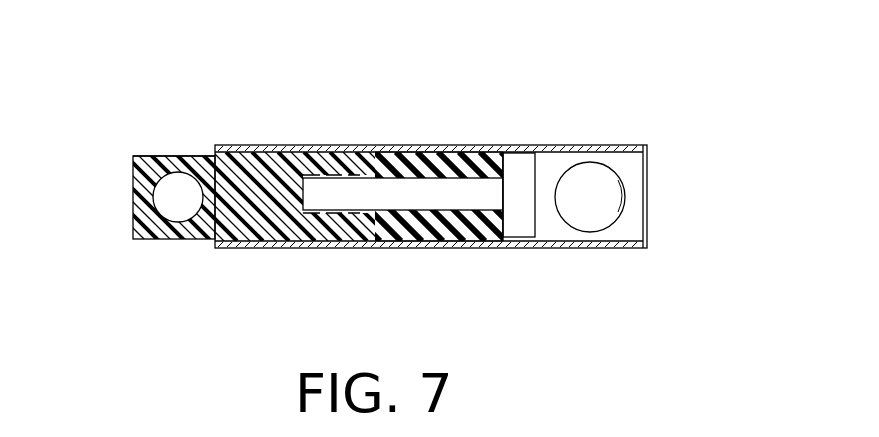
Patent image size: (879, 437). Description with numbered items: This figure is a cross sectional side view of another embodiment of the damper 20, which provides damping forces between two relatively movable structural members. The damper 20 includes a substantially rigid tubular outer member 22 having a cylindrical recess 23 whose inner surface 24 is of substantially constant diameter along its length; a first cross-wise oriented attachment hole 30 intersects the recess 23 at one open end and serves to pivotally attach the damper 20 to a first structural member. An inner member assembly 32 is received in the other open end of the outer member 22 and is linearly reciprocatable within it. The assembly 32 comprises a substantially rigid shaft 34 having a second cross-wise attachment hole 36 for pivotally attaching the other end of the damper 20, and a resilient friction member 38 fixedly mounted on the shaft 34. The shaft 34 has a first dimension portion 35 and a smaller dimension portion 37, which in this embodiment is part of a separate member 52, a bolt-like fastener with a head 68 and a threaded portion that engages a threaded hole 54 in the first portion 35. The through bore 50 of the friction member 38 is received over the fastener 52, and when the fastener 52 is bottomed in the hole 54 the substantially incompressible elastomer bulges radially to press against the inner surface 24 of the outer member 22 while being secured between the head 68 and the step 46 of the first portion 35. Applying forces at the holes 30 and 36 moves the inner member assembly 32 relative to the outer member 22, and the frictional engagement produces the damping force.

The damper 20 is at (377, 188).
The outer member 22 is at (550, 144).
The cylindrical recess 23 is at (647, 152).
The inner surface 24 is at (562, 247).
The first cross-wise oriented attachment hole 30 is at (627, 203).
The inner member assembly 32 is at (245, 206).
The shaft 34 is at (156, 156).
The first dimension portion 35 is at (217, 201).
The second cross-wise oriented attachment hole 36 is at (155, 198).
The smaller dimension portion 37 is at (382, 204).
The resilient friction member 38 is at (440, 199).
The step 46 is at (378, 213).
The through bore 50 is at (442, 185).
The separate member 52 is at (517, 217).
The threaded hole 54 is at (333, 215).
The head 68 is at (520, 165).